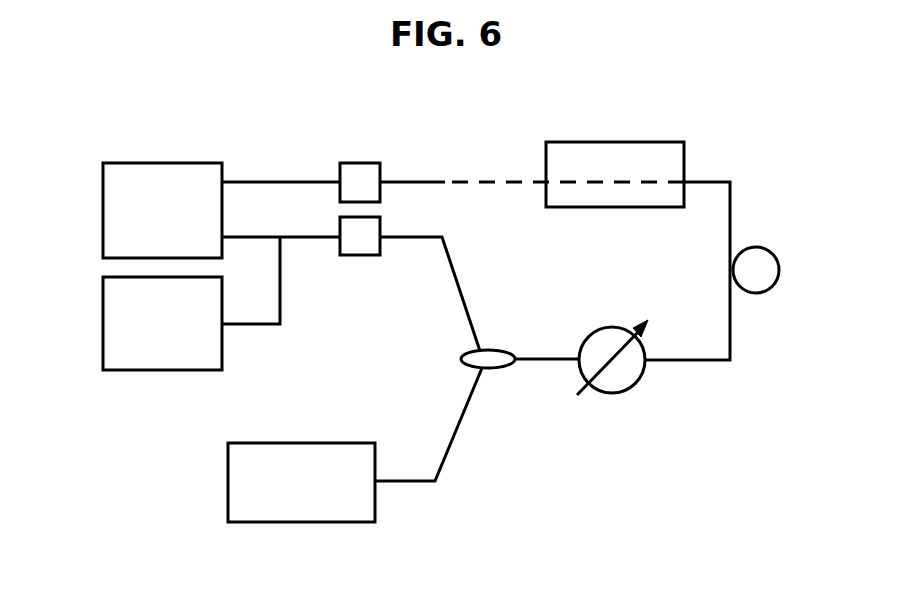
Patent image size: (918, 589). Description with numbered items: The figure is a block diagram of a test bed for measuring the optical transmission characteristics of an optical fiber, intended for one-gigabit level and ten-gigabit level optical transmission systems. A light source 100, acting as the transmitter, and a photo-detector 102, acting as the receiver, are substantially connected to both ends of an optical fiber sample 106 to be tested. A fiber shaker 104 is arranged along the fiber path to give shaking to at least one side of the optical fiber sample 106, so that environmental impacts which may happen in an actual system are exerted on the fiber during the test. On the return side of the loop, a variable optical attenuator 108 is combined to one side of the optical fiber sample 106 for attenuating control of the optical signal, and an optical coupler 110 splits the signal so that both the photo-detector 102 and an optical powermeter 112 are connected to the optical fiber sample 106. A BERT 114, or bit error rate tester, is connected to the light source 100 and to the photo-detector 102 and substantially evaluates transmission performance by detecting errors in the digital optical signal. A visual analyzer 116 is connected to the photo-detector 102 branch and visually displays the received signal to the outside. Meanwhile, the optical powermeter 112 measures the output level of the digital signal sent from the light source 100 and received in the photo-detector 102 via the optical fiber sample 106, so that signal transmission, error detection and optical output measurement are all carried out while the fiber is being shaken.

The light source 100 is at (380, 173).
The photo-detector 102 is at (380, 230).
The fiber shaker 104 is at (615, 141).
The optical fiber sample 106 is at (778, 244).
The variable optical attenuator 108 is at (613, 323).
The optical coupler 110 is at (460, 357).
The optical powermeter 112 is at (228, 481).
The BERT 114 is at (103, 210).
The visual analyzer 116 is at (103, 324).